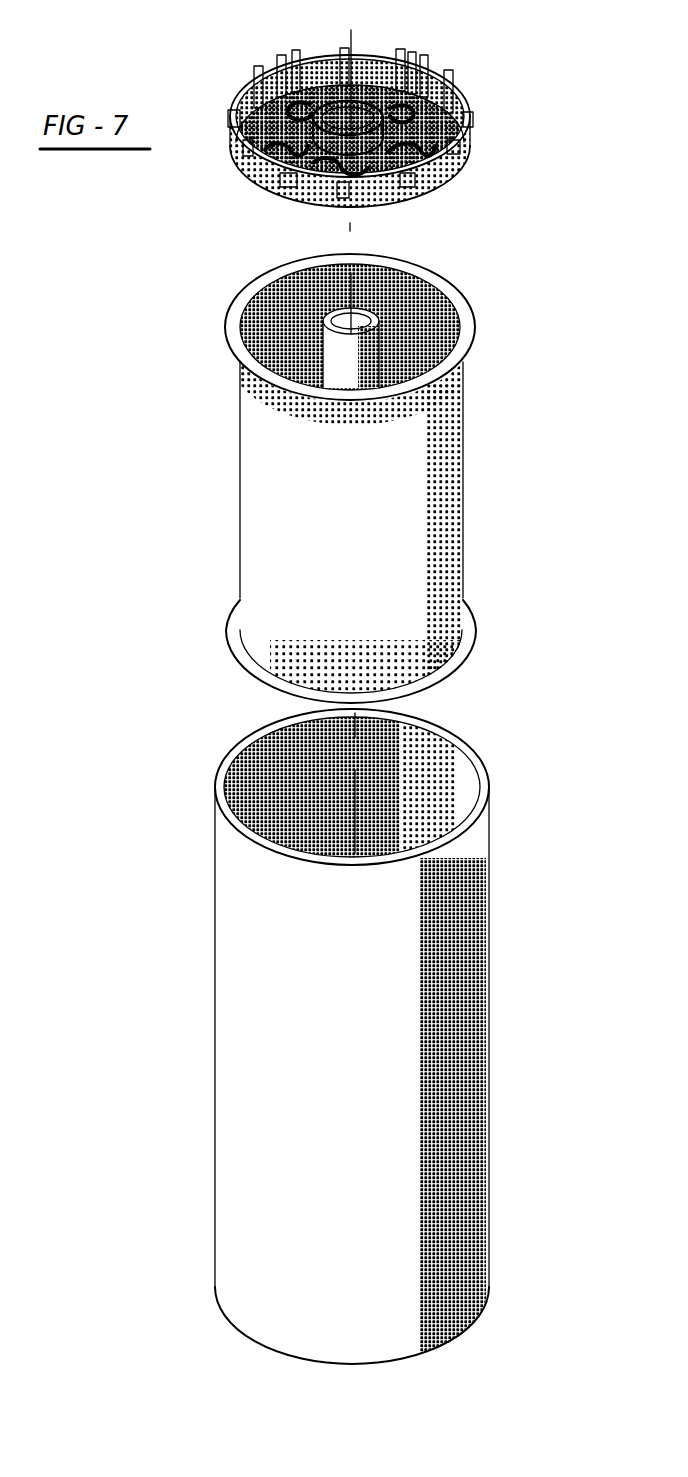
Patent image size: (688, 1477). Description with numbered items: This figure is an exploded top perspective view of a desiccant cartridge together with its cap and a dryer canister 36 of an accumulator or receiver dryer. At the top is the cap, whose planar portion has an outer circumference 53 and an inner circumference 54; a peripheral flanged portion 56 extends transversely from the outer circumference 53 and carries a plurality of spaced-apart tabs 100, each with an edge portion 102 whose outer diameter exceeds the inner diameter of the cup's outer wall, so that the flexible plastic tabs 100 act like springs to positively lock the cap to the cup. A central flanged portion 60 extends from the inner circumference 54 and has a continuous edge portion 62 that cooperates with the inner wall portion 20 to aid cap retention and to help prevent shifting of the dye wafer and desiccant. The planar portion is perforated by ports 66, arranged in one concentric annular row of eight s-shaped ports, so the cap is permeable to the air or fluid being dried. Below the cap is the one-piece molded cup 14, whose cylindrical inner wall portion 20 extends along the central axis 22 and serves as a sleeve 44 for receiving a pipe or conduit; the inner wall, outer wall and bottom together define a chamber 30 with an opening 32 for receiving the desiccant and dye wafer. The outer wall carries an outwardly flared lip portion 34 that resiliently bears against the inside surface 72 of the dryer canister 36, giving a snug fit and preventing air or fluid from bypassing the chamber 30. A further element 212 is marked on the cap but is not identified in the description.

The cup 14 is at (373, 478).
The inner wall portion 20 is at (328, 318).
The central axis 22 is at (350, 37).
The chamber 30 is at (450, 329).
The opening 32 is at (385, 327).
The flared lip portion 34 is at (470, 343).
The dryer canister 36 is at (395, 1036).
The sleeve 44 is at (350, 150).
The outer circumference 53 is at (323, 204).
The inner circumference 54 is at (365, 190).
The peripheral flanged portion 56 is at (268, 187).
The central flanged portion 60 is at (390, 145).
The continuous edge portion 62 is at (397, 113).
The ports 66 is at (250, 152).
The inside surface 72 is at (450, 776).
The tabs 100 is at (262, 78).
The edge portion 102 is at (440, 179).
The tab 212 is at (466, 123).